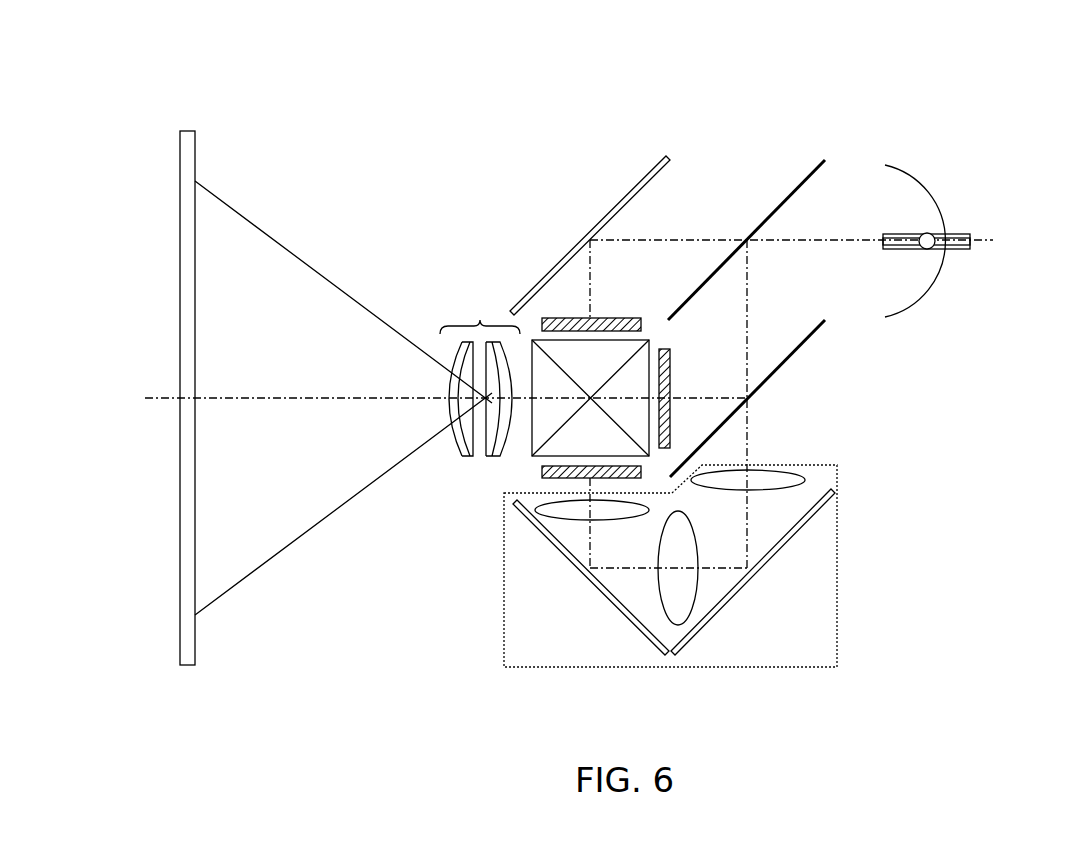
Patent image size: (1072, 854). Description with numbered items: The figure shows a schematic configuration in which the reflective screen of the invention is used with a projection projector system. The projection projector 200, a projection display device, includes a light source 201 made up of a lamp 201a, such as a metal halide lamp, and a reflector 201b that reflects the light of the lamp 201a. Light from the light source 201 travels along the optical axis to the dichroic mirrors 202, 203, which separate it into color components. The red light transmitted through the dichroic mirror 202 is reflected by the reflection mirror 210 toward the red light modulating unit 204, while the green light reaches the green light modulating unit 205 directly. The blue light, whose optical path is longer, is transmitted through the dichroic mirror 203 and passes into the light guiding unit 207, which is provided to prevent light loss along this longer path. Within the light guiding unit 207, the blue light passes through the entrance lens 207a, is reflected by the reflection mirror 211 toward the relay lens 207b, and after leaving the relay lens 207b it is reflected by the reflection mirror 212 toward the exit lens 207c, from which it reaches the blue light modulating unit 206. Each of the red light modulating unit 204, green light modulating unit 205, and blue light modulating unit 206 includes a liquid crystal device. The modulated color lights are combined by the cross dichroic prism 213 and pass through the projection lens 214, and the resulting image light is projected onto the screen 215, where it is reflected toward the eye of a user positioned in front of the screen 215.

The projection projector 200 is at (985, 129).
The light source 201 is at (958, 219).
The lamp 201a is at (927, 236).
The reflector 201b is at (930, 290).
The dichroic mirror 202 is at (795, 190).
The dichroic mirror 203 is at (822, 322).
The red light modulating unit 204 is at (617, 318).
The green light modulating unit 205 is at (671, 367).
The blue light modulating unit 206 is at (542, 476).
The light guiding unit 207 is at (670, 540).
The entrance lens 207a is at (770, 478).
The relay lens 207b is at (690, 583).
The exit lens 207c is at (565, 515).
The reflection mirror 210 is at (622, 200).
The reflection mirror 211 is at (805, 520).
The reflection mirror 212 is at (603, 590).
The cross dichroic prism 213 is at (540, 432).
The projection lens 214 is at (480, 320).
The screen 215 is at (192, 667).